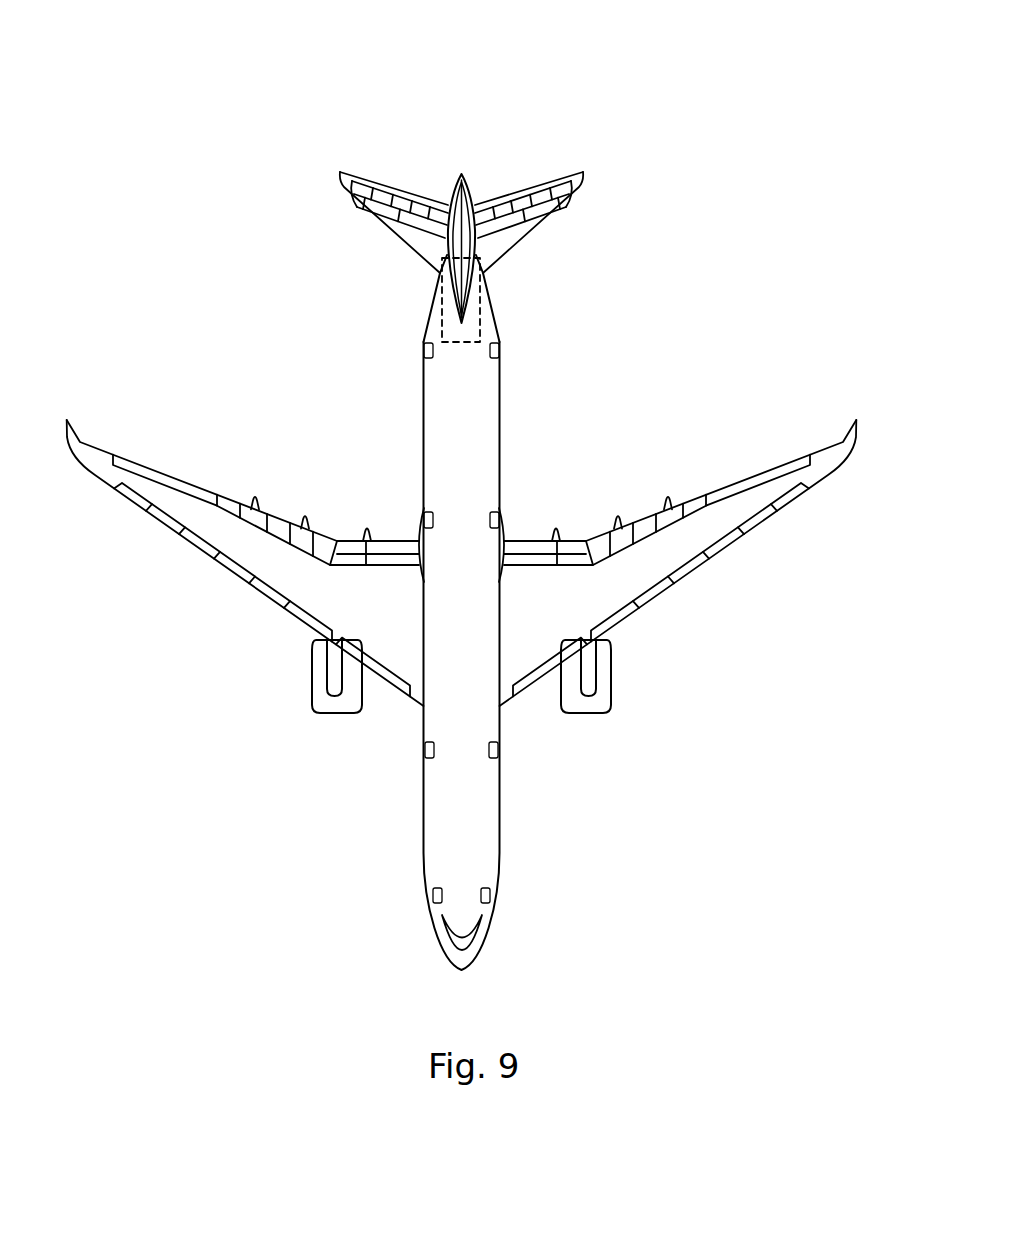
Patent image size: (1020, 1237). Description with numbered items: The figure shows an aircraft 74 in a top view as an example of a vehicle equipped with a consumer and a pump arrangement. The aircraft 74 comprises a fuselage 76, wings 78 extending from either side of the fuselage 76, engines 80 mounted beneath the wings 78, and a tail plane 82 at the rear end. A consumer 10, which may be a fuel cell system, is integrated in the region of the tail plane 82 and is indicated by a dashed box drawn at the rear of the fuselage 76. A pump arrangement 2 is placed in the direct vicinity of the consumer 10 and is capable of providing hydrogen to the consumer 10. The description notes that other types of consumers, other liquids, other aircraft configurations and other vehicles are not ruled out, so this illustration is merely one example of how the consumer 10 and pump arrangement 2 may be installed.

The pump arrangement 2 is at (443, 282).
The consumer 10 is at (470, 323).
The aircraft 74 is at (682, 275).
The fuselage 76 is at (482, 434).
The wings 78 is at (663, 557).
The engines 80 is at (603, 700).
The tail plane 82 is at (526, 132).